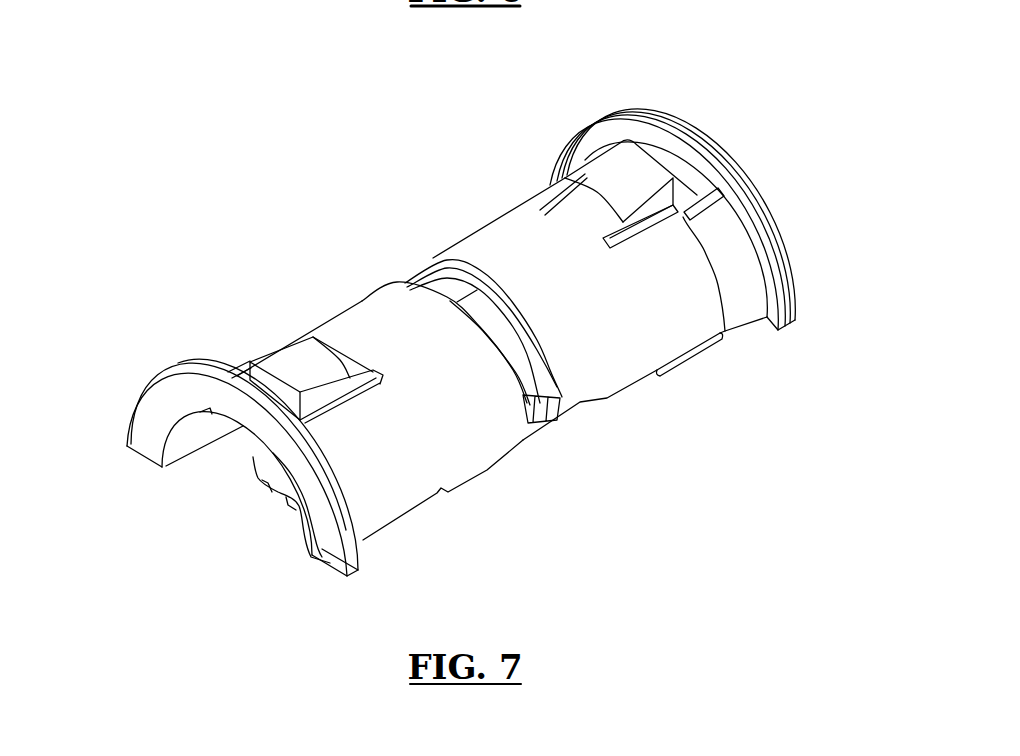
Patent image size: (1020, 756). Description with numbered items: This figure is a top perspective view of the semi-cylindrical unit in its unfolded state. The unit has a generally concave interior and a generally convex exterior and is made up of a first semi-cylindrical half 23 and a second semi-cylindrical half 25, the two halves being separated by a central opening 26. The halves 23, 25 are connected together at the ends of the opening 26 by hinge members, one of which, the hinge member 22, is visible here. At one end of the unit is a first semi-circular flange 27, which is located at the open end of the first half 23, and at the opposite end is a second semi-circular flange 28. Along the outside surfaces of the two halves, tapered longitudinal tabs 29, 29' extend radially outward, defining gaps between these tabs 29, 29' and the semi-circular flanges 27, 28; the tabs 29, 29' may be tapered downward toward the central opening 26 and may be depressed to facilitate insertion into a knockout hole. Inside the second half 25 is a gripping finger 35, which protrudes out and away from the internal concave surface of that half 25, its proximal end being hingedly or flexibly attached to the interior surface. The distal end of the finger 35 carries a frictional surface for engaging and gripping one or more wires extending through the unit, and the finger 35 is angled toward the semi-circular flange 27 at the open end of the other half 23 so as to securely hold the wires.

The hinge member 22 is at (547, 410).
The first semi-cylindrical half 23 is at (533, 237).
The second semi-cylindrical half 25 is at (380, 332).
The central opening 26 is at (498, 323).
The first semi-circular flange 27 is at (655, 140).
The second semi-circular flange 28 is at (167, 420).
The tapered longitudinal tab 29 is at (632, 124).
The tapered longitudinal tab 29' is at (305, 339).
The gripping finger 35 is at (277, 480).